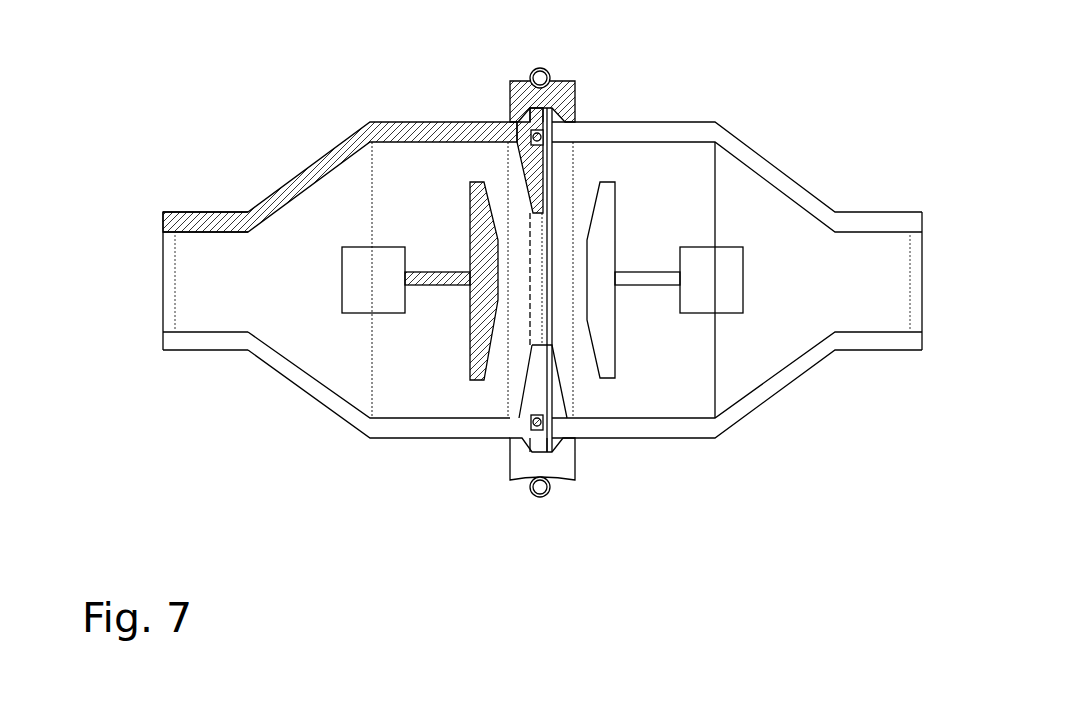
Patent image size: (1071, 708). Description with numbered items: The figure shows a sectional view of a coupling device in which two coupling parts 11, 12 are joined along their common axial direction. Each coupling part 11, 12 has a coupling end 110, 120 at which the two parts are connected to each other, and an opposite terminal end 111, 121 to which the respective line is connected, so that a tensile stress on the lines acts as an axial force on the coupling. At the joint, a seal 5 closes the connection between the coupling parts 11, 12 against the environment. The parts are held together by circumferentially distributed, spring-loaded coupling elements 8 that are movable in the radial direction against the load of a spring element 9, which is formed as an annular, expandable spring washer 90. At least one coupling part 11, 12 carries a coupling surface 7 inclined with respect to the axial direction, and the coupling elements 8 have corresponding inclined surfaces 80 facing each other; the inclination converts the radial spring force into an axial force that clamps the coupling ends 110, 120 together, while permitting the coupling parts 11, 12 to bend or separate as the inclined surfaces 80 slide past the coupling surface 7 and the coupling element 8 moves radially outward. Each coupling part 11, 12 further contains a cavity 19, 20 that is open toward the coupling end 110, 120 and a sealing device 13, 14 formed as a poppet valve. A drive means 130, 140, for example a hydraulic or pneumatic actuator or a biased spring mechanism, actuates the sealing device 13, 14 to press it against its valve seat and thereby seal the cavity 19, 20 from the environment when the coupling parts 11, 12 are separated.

The seal 5 is at (552, 133).
The coupling surface 7 is at (520, 82).
The coupling element 8 is at (508, 98).
The spring element 9 is at (590, 264).
The spring washer 90 is at (548, 70).
The coupling part 11 is at (297, 177).
The coupling part 12 is at (772, 172).
The sealing device 13 is at (468, 377).
The sealing device 14 is at (615, 377).
The cavity 19 is at (338, 355).
The cavity 20 is at (763, 338).
The inclined surface 80 is at (535, 133).
The coupling end 110 is at (505, 462).
The terminal end 111 is at (212, 387).
The coupling end 120 is at (580, 462).
The terminal end 121 is at (858, 172).
The drive means 130 is at (395, 313).
The drive means 140 is at (723, 313).